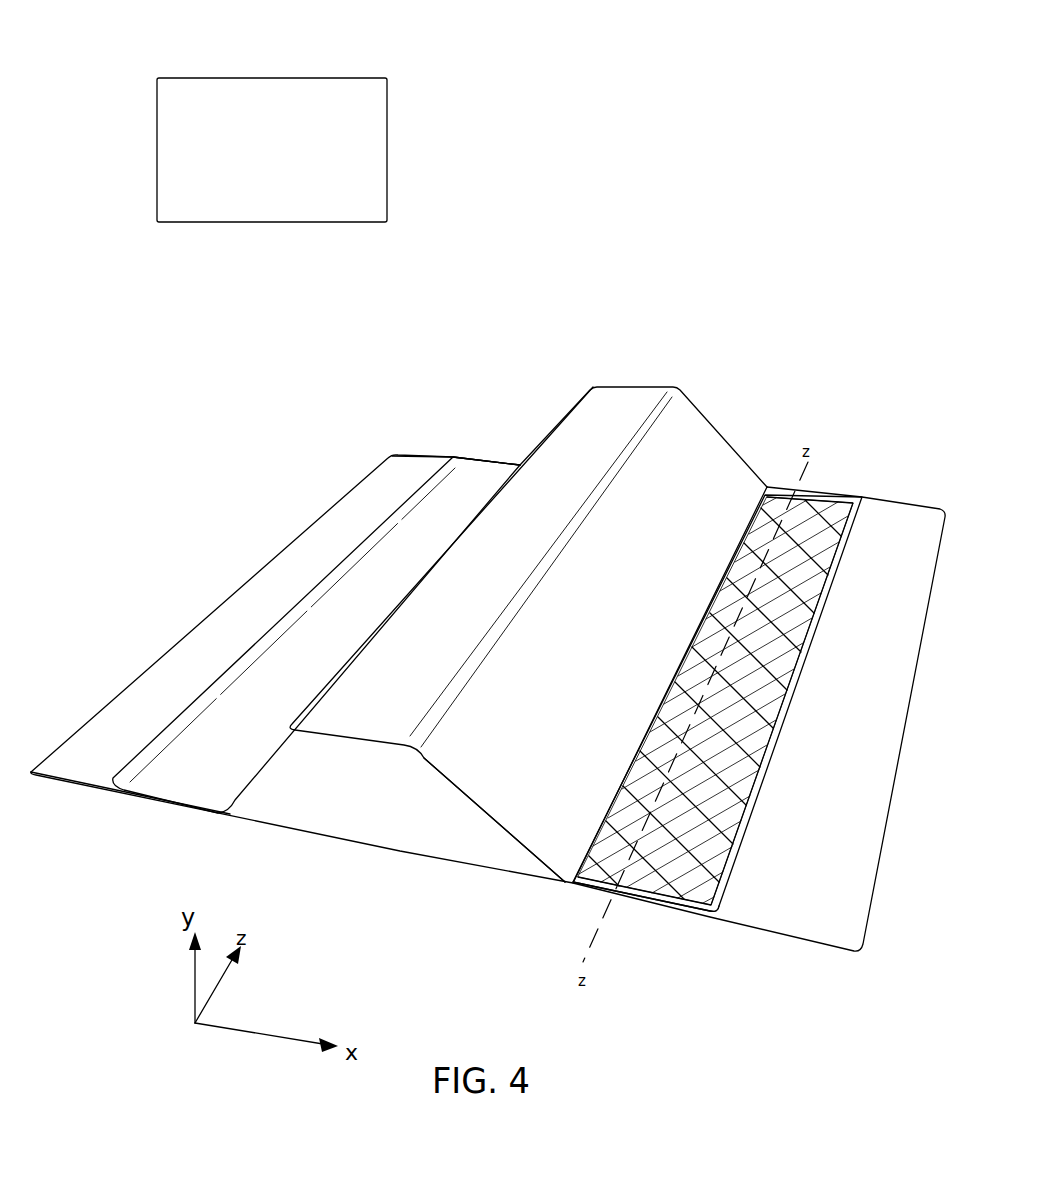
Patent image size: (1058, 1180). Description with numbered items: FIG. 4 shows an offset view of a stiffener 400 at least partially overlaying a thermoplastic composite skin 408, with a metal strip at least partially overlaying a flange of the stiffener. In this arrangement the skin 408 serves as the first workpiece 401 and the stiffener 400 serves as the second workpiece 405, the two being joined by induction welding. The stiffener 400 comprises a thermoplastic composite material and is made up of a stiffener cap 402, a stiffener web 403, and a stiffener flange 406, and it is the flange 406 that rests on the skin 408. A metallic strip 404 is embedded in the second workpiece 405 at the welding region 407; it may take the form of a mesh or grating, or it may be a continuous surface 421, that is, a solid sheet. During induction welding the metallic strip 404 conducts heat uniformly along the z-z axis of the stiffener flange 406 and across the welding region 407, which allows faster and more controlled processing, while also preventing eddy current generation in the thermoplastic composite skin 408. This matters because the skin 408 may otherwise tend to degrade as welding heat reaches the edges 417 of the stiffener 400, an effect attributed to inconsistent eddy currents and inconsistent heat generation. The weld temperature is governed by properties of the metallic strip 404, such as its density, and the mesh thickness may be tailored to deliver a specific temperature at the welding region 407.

The stiffener 400 is at (528, 631).
The first workpiece 401 is at (488, 707).
The stiffener cap 402 is at (568, 457).
The stiffener web 403 is at (533, 818).
The metallic strip 404 is at (847, 523).
The second workpiece 405 is at (680, 388).
The stiffener flange 406 is at (487, 692).
The welding region 407 is at (657, 907).
The thermoplastic composite skin 408 is at (375, 845).
The edges 417 is at (483, 463).
The continuous surface 421 is at (387, 145).